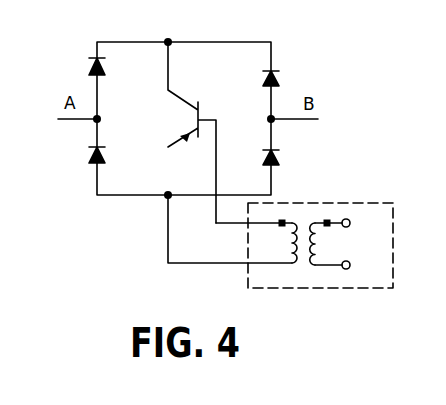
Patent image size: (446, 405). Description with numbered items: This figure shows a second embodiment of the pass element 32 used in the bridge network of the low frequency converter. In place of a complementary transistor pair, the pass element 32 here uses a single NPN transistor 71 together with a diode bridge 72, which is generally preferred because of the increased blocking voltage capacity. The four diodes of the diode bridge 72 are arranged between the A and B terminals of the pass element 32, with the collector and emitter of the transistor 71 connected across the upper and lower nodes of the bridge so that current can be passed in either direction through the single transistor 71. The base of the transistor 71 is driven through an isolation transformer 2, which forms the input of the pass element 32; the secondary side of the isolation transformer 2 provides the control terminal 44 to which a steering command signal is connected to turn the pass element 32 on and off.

The isolation transformer 2 is at (304, 220).
The pass element 32 is at (200, 291).
The control terminal 44 is at (344, 244).
The NPN transistor 71 is at (186, 87).
The diode bridge 72 is at (89, 61).